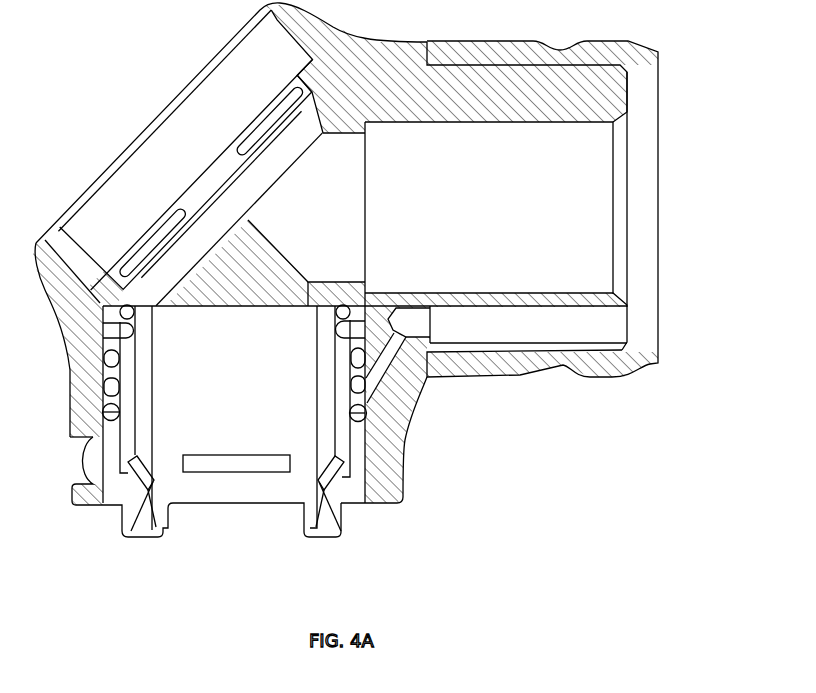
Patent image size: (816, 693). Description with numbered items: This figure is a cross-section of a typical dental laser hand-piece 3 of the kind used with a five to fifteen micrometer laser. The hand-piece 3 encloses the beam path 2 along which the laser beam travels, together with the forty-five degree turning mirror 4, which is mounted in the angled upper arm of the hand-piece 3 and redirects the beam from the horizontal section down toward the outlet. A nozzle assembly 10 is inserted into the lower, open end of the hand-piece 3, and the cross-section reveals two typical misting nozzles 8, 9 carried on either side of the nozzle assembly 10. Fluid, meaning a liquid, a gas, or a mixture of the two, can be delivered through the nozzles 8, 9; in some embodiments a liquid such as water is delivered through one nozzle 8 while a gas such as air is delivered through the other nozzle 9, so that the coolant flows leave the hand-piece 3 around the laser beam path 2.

The beam path 2 is at (602, 182).
The hand-piece 3 is at (533, 43).
The 45 degree turning mirror 4 is at (234, 200).
The misting nozzle 8 is at (139, 512).
The misting nozzle 9 is at (335, 500).
The nozzle assembly 10 is at (228, 437).